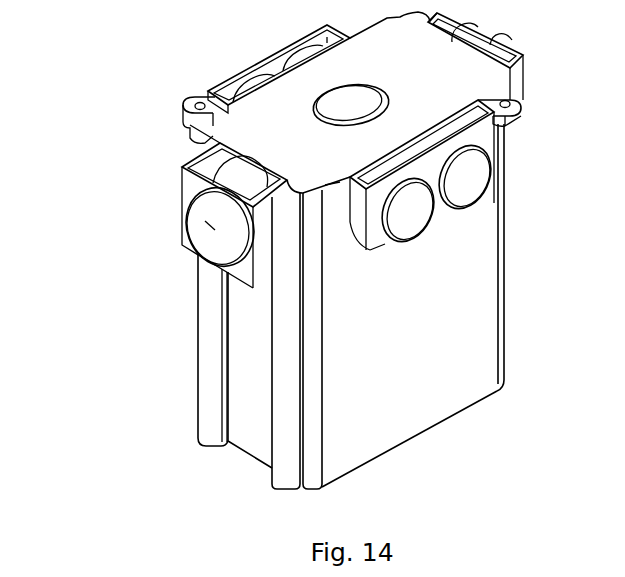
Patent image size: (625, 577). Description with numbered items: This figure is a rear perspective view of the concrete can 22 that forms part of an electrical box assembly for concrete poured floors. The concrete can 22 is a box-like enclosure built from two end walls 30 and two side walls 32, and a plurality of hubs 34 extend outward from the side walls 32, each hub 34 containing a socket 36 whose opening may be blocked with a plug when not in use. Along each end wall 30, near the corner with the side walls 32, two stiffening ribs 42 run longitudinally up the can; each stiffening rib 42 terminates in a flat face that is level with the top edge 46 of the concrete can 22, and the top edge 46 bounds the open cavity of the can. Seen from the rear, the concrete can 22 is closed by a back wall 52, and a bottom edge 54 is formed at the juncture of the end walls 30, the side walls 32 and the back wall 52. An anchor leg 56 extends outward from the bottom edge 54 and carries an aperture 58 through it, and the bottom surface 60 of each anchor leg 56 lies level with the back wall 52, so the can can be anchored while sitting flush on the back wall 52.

The concrete can 22 is at (112, 106).
The end wall 30 is at (236, 338).
The side wall 32 is at (405, 334).
The hub 34 is at (182, 192).
The socket 36 is at (195, 228).
The stiffening rib 42 is at (197, 378).
The top edge 46 is at (403, 440).
The back wall 52 is at (405, 81).
The bottom edge 54 is at (331, 188).
The anchor leg 56 is at (517, 113).
The aperture 58 is at (517, 95).
The bottom surface 60 is at (226, 98).